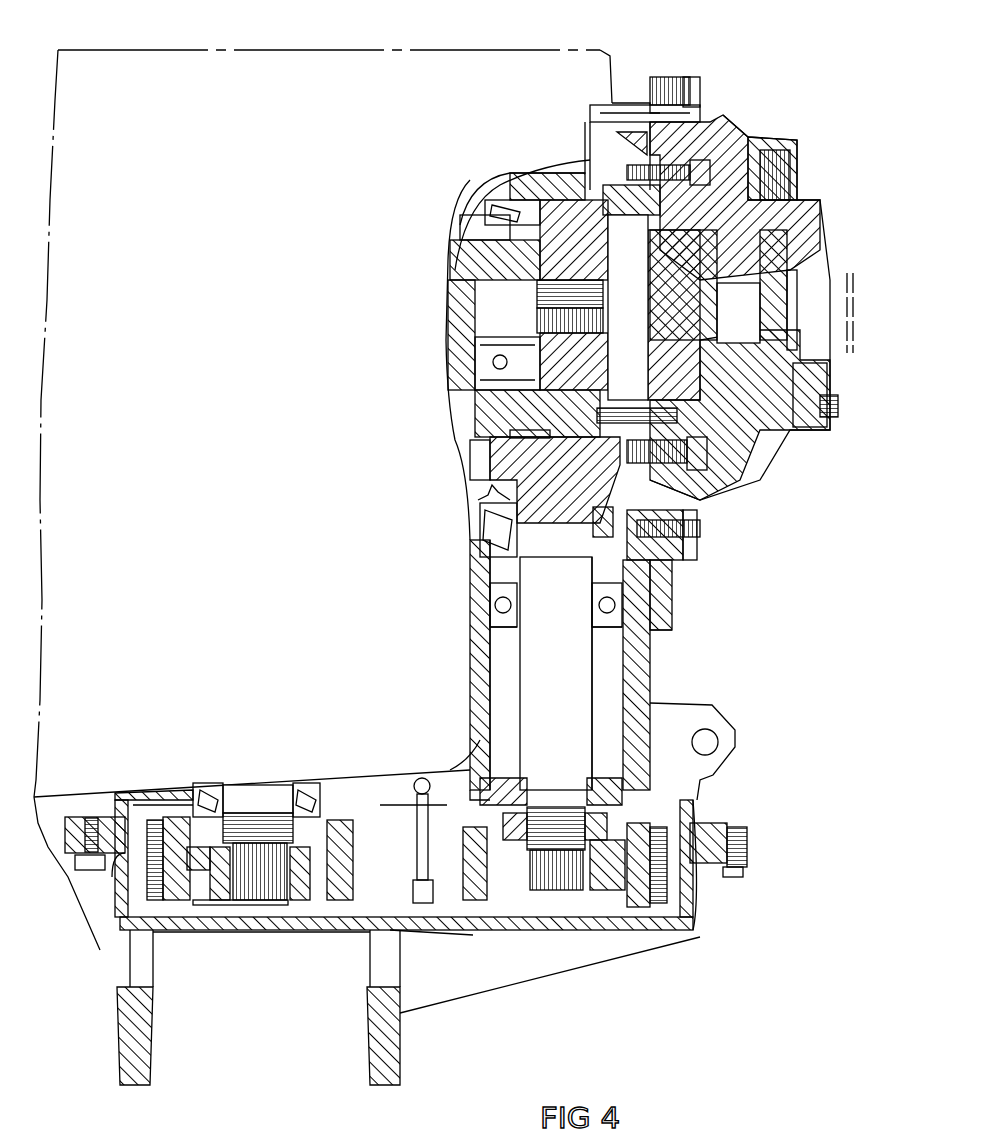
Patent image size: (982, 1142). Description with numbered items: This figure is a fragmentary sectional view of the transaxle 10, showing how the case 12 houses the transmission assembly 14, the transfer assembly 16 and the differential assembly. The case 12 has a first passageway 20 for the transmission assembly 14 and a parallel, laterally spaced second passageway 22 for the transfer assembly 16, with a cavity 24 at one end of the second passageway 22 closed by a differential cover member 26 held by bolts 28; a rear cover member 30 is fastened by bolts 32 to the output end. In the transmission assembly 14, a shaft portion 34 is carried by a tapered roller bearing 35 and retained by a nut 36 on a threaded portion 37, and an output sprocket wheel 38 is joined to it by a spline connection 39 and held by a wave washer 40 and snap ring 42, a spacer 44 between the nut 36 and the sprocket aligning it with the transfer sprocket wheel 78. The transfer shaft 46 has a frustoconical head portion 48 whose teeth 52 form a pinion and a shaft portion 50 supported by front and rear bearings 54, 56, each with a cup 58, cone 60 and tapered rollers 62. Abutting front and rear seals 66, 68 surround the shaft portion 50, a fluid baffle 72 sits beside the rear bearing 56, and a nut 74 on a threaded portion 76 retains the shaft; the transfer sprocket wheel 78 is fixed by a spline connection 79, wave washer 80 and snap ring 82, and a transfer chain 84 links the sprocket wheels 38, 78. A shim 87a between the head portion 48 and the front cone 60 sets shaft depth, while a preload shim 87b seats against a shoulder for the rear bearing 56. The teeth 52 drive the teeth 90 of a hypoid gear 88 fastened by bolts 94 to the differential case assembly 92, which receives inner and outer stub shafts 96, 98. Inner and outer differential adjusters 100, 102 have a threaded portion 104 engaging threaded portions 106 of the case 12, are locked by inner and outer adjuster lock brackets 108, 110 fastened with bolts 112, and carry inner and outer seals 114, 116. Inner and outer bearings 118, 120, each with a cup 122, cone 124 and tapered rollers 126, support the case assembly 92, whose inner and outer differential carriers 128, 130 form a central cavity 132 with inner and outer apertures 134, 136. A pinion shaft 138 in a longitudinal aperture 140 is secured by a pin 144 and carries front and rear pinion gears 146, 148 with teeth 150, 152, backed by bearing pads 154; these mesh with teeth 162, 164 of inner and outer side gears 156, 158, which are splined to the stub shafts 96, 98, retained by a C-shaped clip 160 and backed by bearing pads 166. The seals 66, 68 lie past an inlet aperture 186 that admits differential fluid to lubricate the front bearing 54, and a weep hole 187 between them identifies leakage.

The transaxle 10 is at (715, 50).
The case 12 is at (650, 675).
The transmission assembly 14 is at (220, 783).
The transfer assembly 16 is at (595, 702).
The first passageway 20 is at (300, 785).
The second passageway 22 is at (660, 655).
The cavity 24 is at (632, 108).
The differential cover member 26 is at (722, 118).
The bolts 28 is at (700, 90).
The rear cover member 30 is at (285, 910).
The bolts 32 is at (88, 870).
The shaft portion 34 is at (255, 783).
The bearing 35 is at (200, 795).
The nut 36 is at (320, 808).
The threaded portion 37 is at (305, 862).
The output sprocket wheel 38 is at (345, 855).
The spline connection 39 is at (262, 905).
The wave washer 40 is at (215, 905).
The snap ring 42 is at (235, 905).
The spacer 44 is at (300, 875).
The transfer shaft 46 is at (515, 640).
The head portion 48 is at (515, 470).
The shaft portion 50 is at (530, 672).
The teeth 52 is at (520, 440).
The front bearing 54 is at (490, 548).
The rear bearing 56 is at (470, 760).
The cup 58 is at (485, 560).
The cone 60 is at (500, 515).
The tapered rollers 62 is at (495, 530).
The front seal 66 is at (500, 595).
The rear seal 68 is at (500, 615).
The fluid baffle 72 is at (718, 742).
The nut 74 is at (700, 810).
The threaded portion 76 is at (680, 790).
The transfer sprocket wheel 78 is at (600, 905).
The spline connection 79 is at (560, 905).
The wave washer 80 is at (578, 905).
The snap ring 82 is at (540, 905).
The transfer chain 84 is at (665, 870).
The shim 87a is at (490, 505).
The preload shim 87b is at (495, 790).
The hypoid gear 88 is at (700, 515).
The teeth 90 is at (690, 540).
The differential case assembly 92 is at (770, 143).
The bolts 94 is at (705, 195).
The inner stub shaft 96 is at (545, 305).
The outer stub shaft 98 is at (775, 292).
The inner differential adjuster 100 is at (483, 233).
The outer differential adjuster 102 is at (795, 235).
The threaded portion 104 is at (795, 248).
The threaded portions 106 is at (800, 220).
The inner adjuster lock bracket 108 is at (480, 226).
The outer adjuster lock bracket 110 is at (810, 380).
The bolts 112 is at (828, 410).
The inner seal 114 is at (465, 255).
The outer seal 116 is at (790, 342).
The inner bearing 118 is at (480, 385).
The outer bearing 120 is at (790, 420).
The cup 122 is at (770, 430).
The cone 124 is at (785, 305).
The tapered rollers 126 is at (785, 322).
The inner differential carrier 128 is at (587, 200).
The outer differential carrier 130 is at (790, 170).
The central cavity 132 is at (500, 420).
The inner aperture 134 is at (490, 345).
The outer aperture 136 is at (790, 270).
The pinion shaft 138 is at (613, 190).
The longitudinal aperture 140 is at (600, 100).
The pin 144 is at (720, 505).
The front pinion gear 146 is at (660, 77).
The rear pinion gear 148 is at (500, 460).
The teeth 150 is at (790, 150).
The teeth 152 is at (750, 445).
The bearing pads 154 is at (676, 105).
The inner side gear 156 is at (540, 322).
The outer side gear 158 is at (795, 205).
The C-shaped clip 160 is at (738, 312).
The teeth 162 is at (547, 200).
The teeth 164 is at (737, 319).
The bearing pads 166 is at (790, 190).
The inlet aperture 186 is at (690, 605).
The weep hole 187 is at (672, 625).